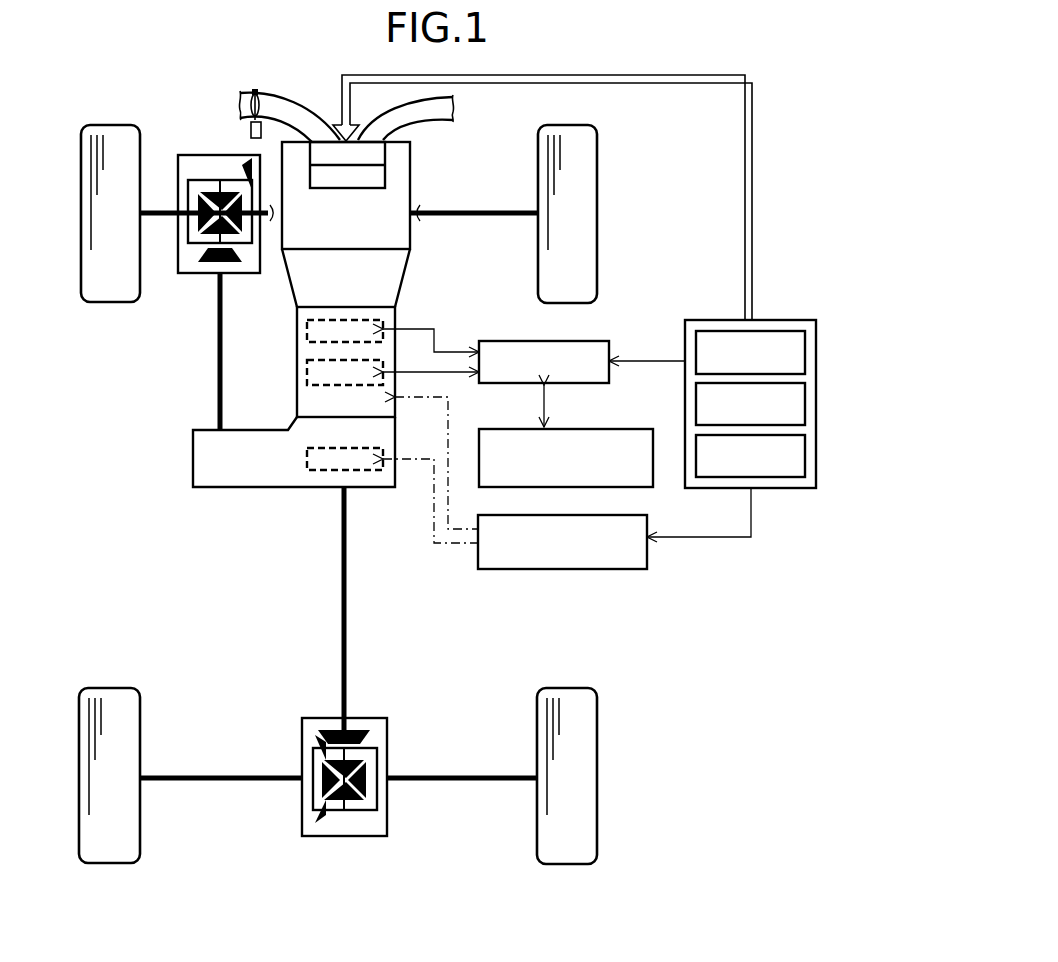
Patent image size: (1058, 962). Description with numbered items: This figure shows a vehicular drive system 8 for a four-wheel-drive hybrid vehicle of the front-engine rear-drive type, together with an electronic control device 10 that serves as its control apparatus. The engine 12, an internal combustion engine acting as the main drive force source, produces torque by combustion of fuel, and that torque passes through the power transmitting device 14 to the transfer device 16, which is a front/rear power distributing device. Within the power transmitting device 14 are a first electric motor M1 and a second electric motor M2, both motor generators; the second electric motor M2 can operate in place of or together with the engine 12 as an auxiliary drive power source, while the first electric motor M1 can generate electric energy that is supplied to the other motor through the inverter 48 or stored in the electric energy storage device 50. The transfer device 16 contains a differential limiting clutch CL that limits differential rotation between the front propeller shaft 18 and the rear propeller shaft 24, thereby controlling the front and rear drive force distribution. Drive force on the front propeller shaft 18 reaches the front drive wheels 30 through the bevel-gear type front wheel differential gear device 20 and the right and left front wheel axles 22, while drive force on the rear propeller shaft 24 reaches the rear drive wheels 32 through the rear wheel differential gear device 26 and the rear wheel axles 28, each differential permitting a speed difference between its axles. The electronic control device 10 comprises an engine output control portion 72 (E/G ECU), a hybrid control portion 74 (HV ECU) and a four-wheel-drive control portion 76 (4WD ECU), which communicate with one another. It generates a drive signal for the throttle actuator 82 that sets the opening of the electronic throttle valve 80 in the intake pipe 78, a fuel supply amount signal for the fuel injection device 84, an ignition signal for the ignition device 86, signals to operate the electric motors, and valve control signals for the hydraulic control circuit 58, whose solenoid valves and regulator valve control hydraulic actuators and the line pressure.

The vehicular drive system 8 is at (178, 96).
The electronic control device 10 is at (769, 381).
The engine 12 is at (370, 219).
The power transmitting device 14 is at (344, 353).
The transfer device 16 is at (282, 471).
The front propeller shaft 18 is at (217, 386).
The front wheel differential gear device 20 is at (202, 275).
The front wheel axles 22 is at (157, 207).
The rear propeller shaft 24 is at (342, 620).
The rear wheel differential gear device 26 is at (378, 718).
The rear wheel axles 28 is at (228, 783).
The front drive wheels 30 is at (108, 302).
The rear drive wheels 32 is at (120, 692).
The inverter 48 is at (598, 342).
The electric energy storage device 50 is at (598, 430).
The hydraulic control circuit 58 is at (598, 516).
The engine output control portion 72 is at (805, 339).
The hybrid control portion 74 is at (805, 391).
The four-wheel-drive control portion 76 is at (805, 441).
The intake pipe 78 is at (278, 97).
The electronic throttle valve 80 is at (255, 90).
The throttle actuator 82 is at (250, 128).
The fuel injection device 84 is at (314, 155).
The ignition device 86 is at (348, 178).
The first electric motor M1 is at (308, 322).
The second electric motor M2 is at (308, 370).
The differential limiting clutch CL is at (330, 473).